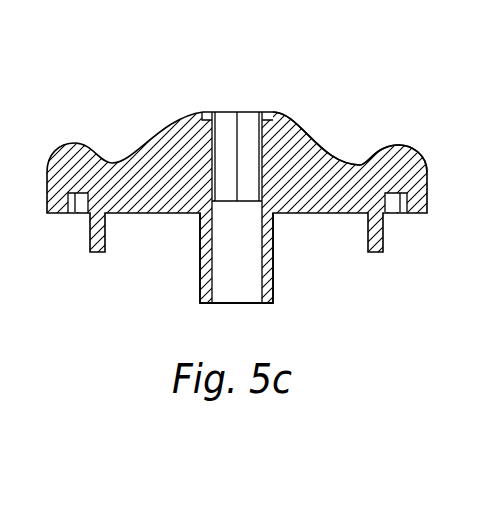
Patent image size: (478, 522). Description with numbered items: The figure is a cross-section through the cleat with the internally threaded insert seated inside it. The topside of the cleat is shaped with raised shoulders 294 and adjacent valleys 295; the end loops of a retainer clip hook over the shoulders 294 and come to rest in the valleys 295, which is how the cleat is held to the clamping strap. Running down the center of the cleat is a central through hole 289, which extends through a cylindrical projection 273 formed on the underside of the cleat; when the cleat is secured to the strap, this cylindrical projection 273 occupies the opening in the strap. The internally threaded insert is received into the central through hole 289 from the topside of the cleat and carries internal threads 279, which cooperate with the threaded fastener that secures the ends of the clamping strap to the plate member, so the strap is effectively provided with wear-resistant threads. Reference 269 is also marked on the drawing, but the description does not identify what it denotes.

The top notch 269 is at (207, 112).
The internal threads 279 is at (258, 158).
The valleys 295 is at (360, 165).
The shoulders 294 is at (400, 144).
The cylindrical projection 273 is at (273, 273).
The central through hole 289 is at (237, 294).